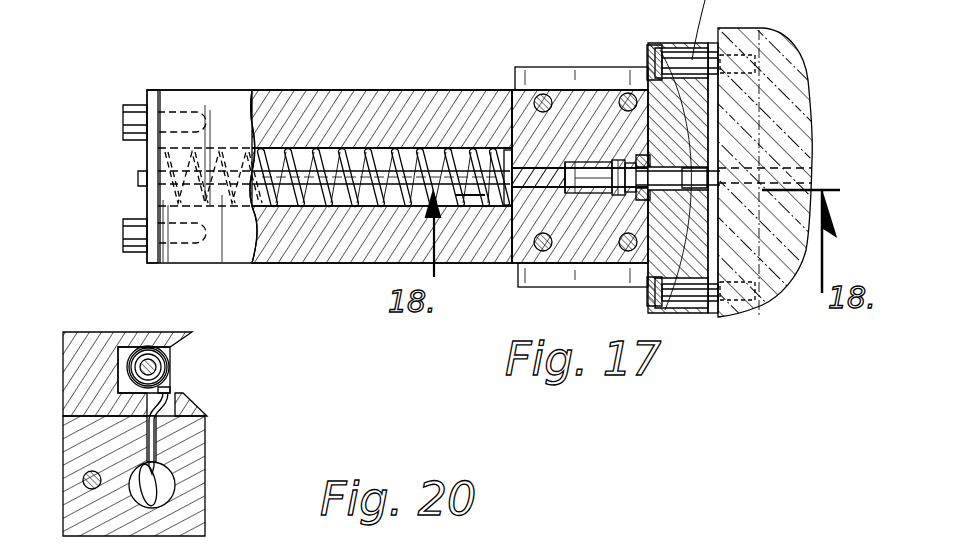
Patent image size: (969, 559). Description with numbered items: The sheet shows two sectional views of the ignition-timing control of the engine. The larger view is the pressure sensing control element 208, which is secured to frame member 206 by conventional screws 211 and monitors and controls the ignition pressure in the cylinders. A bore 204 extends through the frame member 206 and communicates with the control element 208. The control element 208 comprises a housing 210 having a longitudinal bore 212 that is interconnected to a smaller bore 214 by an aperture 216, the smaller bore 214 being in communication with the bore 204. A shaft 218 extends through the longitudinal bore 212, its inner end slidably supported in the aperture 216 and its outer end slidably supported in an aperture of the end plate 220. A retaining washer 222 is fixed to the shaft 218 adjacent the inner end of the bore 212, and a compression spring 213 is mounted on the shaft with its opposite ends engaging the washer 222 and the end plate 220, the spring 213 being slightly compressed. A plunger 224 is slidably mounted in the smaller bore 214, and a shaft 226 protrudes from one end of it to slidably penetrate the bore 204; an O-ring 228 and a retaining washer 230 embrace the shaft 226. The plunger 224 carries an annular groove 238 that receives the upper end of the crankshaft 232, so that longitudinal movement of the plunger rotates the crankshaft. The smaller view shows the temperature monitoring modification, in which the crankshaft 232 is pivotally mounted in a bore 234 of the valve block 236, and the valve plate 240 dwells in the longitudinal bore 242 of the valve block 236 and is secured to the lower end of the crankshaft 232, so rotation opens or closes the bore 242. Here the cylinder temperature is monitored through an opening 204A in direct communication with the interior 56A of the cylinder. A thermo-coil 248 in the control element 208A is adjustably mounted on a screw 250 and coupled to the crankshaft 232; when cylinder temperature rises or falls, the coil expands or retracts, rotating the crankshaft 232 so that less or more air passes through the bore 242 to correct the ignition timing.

In FIG. 17, the bore 204 is at (712, 168).
In FIG. 17, the frame member 206 is at (785, 85).
In FIG. 17, the control element 208 is at (306, 84).
In FIG. 17, the housing 210 is at (360, 100).
In FIG. 17, the screws 211 is at (694, 315).
In FIG. 17, the longitudinal bore 212 is at (463, 157).
In FIG. 17, the compression spring 213 is at (398, 158).
In FIG. 17, the smaller bore 214 is at (553, 165).
In FIG. 17, the aperture 216 is at (530, 170).
In FIG. 17, the shaft 218 is at (276, 170).
In FIG. 17, the end plate 220 is at (152, 93).
In FIG. 17, the retaining washer 222 is at (506, 265).
In FIG. 17, the plunger 224 is at (582, 168).
In FIG. 17, the shaft 226 is at (633, 195).
In FIG. 17, the O-ring 228 is at (652, 62).
In FIG. 17, the retaining washer 230 is at (622, 200).
In FIG. 17, the annular groove 238 is at (617, 165).
In FIG. 17, the valve plate 240 is at (568, 272).
In FIG. 20, the valve plate 240 is at (150, 490).
In FIG. 20, the opening 204A is at (185, 371).
In FIG. 20, the control element 208A is at (143, 333).
In FIG. 20, the crankshaft 232 is at (150, 398).
In FIG. 20, the bore 234 is at (150, 440).
In FIG. 20, the valve block 236 is at (205, 470).
In FIG. 20, the longitudinal bore 242 is at (170, 490).
In FIG. 20, the thermo-coil 248 is at (165, 370).
In FIG. 20, the screw 250 is at (150, 365).
In FIG. 20, the interior 56A is at (253, 393).